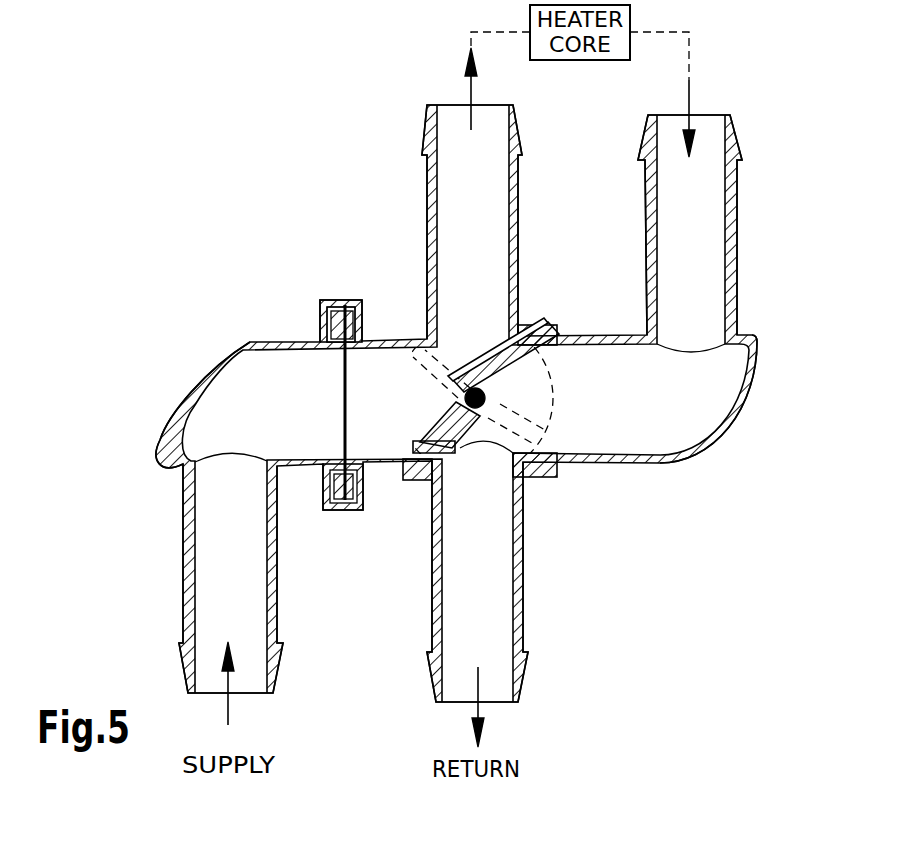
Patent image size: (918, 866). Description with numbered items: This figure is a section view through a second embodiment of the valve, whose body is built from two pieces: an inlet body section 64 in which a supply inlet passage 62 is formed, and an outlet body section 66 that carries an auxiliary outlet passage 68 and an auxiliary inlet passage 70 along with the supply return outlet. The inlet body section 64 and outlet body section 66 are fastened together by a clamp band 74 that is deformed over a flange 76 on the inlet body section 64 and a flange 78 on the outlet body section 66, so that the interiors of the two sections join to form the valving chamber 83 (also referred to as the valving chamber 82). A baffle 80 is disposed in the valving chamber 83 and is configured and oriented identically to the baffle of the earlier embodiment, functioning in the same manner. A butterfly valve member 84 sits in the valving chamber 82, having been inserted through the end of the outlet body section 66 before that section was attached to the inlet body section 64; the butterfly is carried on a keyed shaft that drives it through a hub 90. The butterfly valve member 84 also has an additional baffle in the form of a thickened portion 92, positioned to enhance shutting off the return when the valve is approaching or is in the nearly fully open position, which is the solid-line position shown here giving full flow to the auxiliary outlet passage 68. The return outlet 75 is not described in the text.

The supply inlet passage 62 is at (198, 625).
The inlet body section 64 is at (203, 368).
The outlet body section 66 is at (638, 464).
The auxiliary outlet passage 68 is at (437, 187).
The auxiliary inlet passage 70 is at (736, 276).
The clamp band 74 is at (348, 300).
The return outlet pipe 75 is at (442, 615).
The flange 76 is at (320, 312).
The flange 78 is at (362, 322).
The baffle 80 is at (500, 325).
The valving chamber 82 is at (704, 440).
The valving chamber 83 is at (357, 412).
The butterfly valve member 84 is at (500, 387).
The hub 90 is at (465, 394).
The thickened portion 92 is at (463, 453).